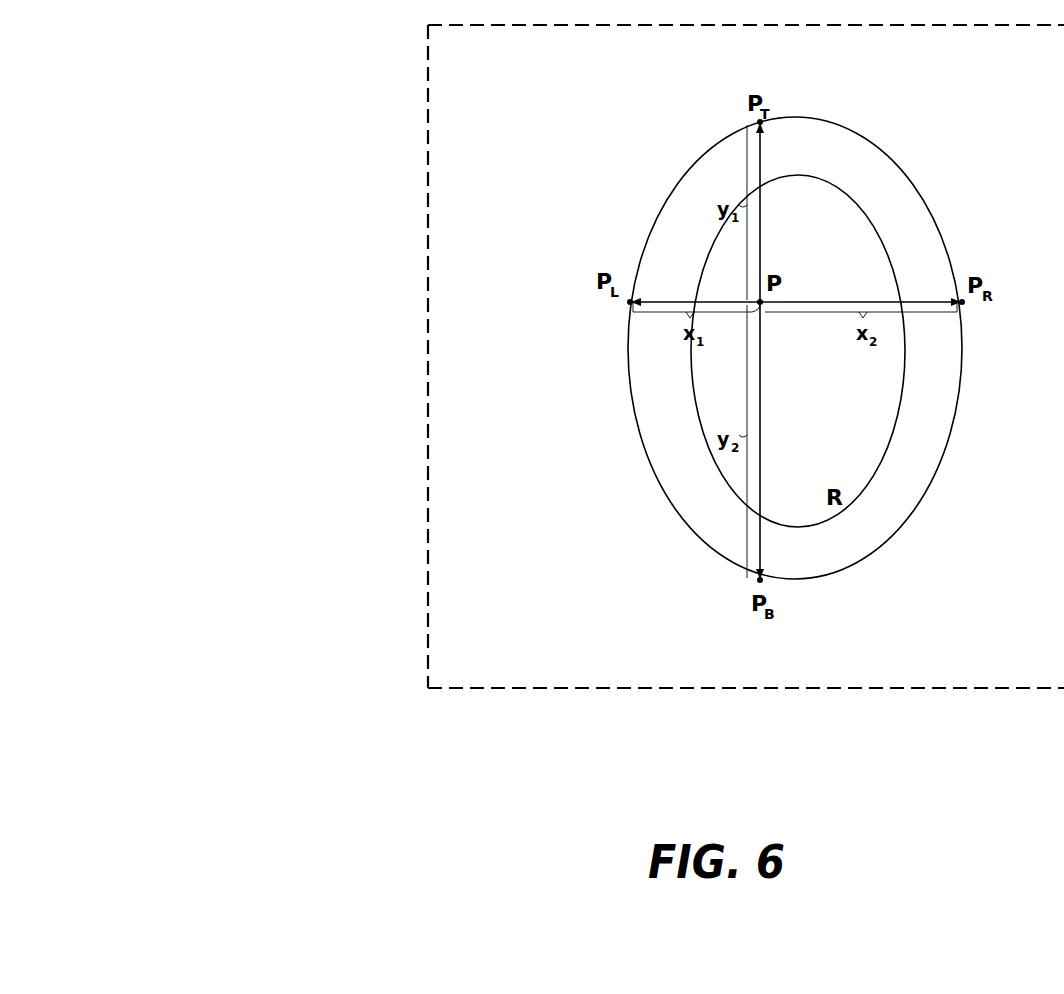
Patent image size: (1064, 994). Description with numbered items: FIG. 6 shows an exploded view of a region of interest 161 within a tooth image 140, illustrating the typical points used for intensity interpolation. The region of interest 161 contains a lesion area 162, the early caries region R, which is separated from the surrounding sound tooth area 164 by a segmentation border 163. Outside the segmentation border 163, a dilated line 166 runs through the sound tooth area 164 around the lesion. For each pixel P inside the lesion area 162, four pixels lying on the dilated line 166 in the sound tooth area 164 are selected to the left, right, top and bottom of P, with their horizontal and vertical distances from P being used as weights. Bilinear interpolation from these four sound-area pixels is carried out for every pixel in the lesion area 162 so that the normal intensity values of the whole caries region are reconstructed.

The image 140 is at (614, 356).
The region of interest 161 is at (423, 137).
The lesion area 162 is at (733, 360).
The segmentation border 163 is at (717, 473).
The sound tooth area 164 is at (592, 533).
The dilated line 166 is at (713, 560).